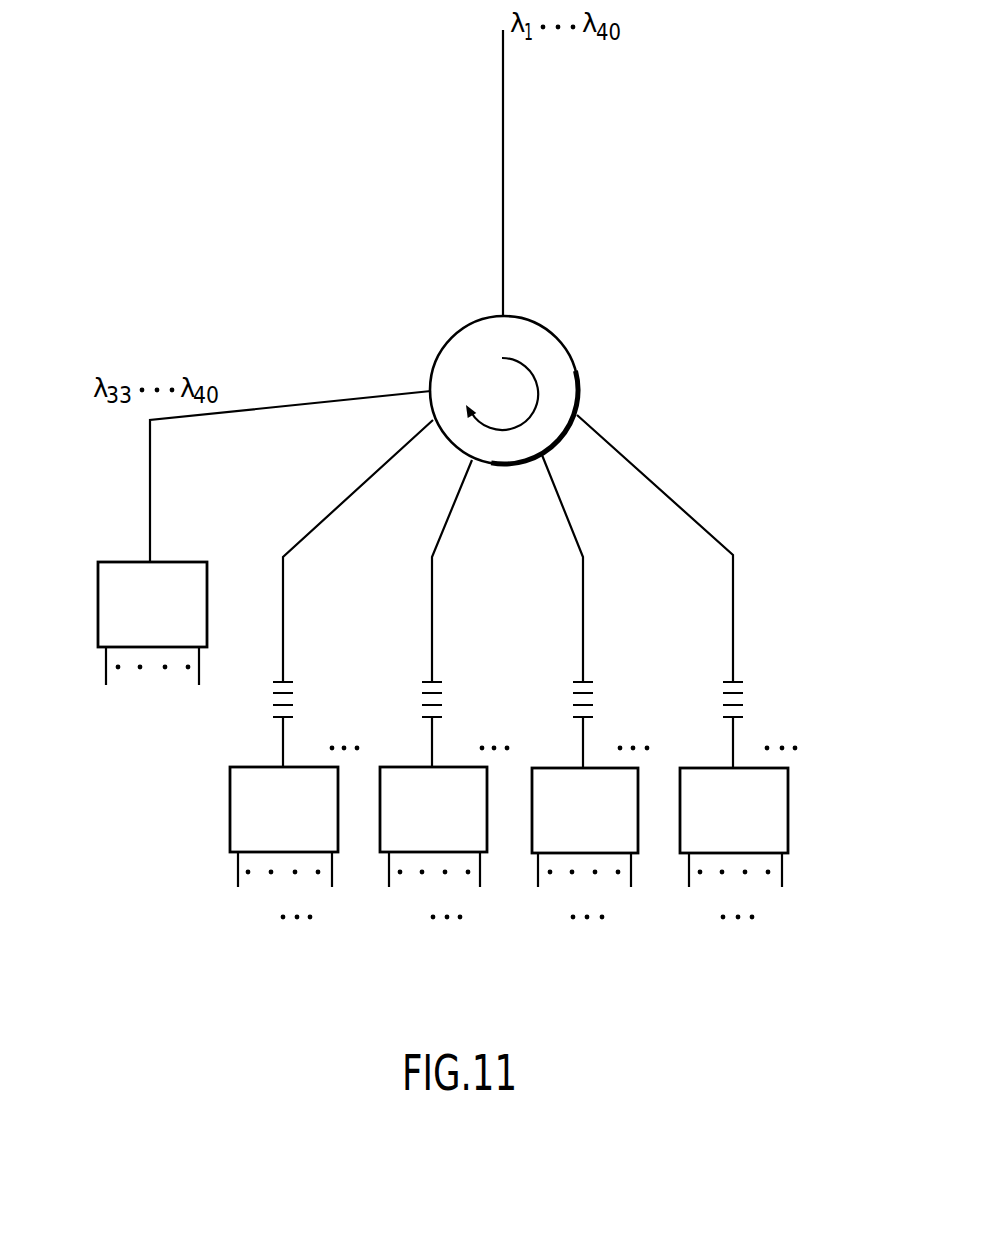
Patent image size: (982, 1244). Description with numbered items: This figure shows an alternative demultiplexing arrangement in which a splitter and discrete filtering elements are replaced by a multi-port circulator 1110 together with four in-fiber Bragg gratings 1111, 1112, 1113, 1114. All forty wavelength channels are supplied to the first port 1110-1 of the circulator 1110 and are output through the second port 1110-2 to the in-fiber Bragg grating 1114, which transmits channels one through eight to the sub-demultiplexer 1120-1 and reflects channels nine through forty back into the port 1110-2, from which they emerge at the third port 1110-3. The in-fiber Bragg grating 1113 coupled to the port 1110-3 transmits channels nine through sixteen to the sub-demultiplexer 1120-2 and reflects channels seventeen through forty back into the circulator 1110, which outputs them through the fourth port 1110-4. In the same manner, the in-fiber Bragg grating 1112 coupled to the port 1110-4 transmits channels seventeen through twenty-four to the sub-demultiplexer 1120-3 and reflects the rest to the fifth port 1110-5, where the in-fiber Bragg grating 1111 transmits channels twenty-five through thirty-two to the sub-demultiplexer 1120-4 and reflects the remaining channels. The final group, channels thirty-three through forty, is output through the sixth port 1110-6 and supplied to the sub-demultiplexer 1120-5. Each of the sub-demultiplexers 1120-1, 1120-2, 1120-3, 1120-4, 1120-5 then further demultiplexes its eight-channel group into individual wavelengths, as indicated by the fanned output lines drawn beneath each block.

The five port circulator 1110 is at (570, 350).
The first port 1110-1 is at (498, 312).
The second port 1110-2 is at (578, 415).
The third port 1110-3 is at (540, 457).
The fourth port 1110-4 is at (470, 462).
The fifth port 1110-5 is at (436, 420).
The sixth port 1110-6 is at (431, 379).
The in-fiber Bragg grating 1111 is at (280, 682).
The in-fiber Bragg grating 1112 is at (430, 682).
The in-fiber Bragg grating 1113 is at (580, 682).
The in-fiber Bragg grating 1114 is at (730, 682).
The sub-demultiplexer 1120-1 is at (788, 813).
The sub-demultiplexer 1120-2 is at (638, 838).
The sub-demultiplexer 1120-3 is at (487, 838).
The sub-demultiplexer 1120-4 is at (230, 813).
The sub-demultiplexer 1120-5 is at (97, 602).